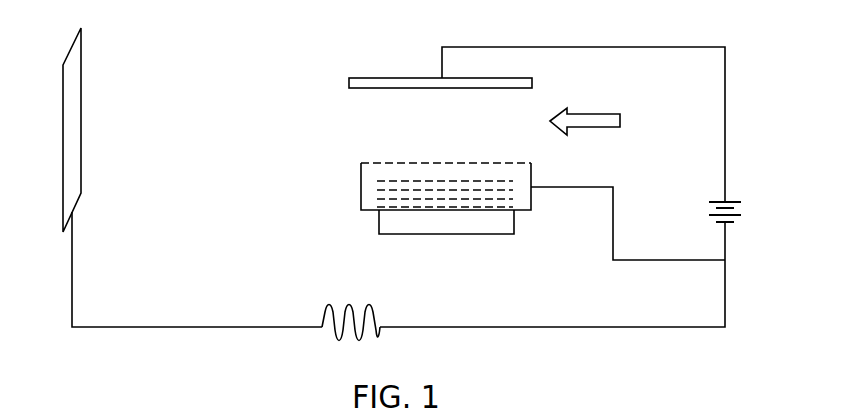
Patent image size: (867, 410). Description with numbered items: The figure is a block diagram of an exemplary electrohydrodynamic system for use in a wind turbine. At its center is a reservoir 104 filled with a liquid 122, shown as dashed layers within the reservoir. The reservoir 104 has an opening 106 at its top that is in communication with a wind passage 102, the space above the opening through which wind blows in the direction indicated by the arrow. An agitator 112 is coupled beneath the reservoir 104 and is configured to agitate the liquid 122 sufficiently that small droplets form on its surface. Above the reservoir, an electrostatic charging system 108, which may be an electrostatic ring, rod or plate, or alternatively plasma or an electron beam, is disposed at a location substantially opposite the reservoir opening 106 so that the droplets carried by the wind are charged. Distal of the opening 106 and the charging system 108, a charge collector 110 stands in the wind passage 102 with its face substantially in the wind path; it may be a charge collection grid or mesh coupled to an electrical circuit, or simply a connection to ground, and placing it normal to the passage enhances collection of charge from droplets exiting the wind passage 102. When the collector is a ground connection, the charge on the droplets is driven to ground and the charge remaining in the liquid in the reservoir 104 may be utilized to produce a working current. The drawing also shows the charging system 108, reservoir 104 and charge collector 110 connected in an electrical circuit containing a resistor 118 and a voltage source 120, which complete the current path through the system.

The wind passage 102 is at (525, 103).
The reservoir 104 is at (531, 201).
The opening 106 is at (492, 163).
The electrostatic charging system 108 is at (368, 77).
The charge collector 110 is at (81, 53).
The agitator 112 is at (514, 230).
The resistor 118 is at (370, 313).
The voltage source / battery 120 is at (730, 202).
The liquid 122 is at (380, 200).